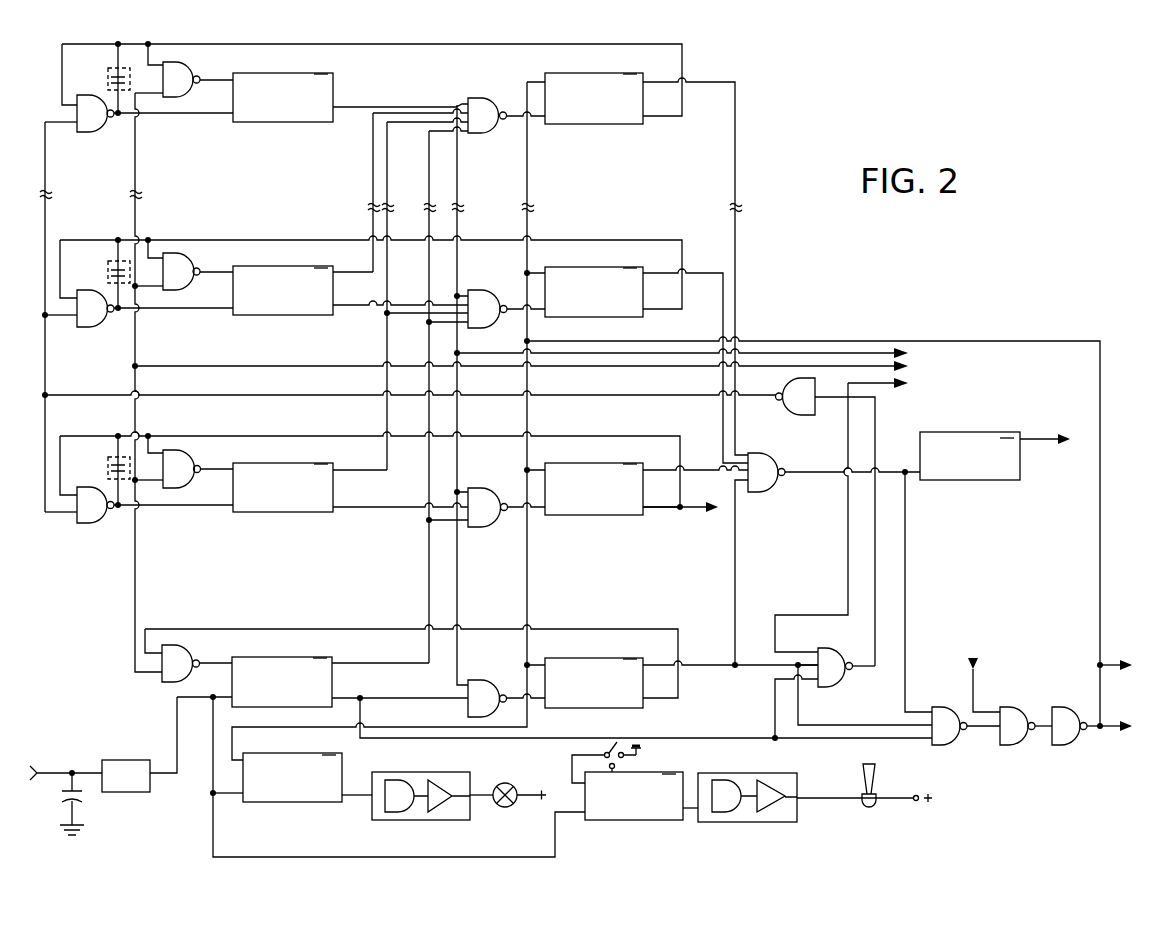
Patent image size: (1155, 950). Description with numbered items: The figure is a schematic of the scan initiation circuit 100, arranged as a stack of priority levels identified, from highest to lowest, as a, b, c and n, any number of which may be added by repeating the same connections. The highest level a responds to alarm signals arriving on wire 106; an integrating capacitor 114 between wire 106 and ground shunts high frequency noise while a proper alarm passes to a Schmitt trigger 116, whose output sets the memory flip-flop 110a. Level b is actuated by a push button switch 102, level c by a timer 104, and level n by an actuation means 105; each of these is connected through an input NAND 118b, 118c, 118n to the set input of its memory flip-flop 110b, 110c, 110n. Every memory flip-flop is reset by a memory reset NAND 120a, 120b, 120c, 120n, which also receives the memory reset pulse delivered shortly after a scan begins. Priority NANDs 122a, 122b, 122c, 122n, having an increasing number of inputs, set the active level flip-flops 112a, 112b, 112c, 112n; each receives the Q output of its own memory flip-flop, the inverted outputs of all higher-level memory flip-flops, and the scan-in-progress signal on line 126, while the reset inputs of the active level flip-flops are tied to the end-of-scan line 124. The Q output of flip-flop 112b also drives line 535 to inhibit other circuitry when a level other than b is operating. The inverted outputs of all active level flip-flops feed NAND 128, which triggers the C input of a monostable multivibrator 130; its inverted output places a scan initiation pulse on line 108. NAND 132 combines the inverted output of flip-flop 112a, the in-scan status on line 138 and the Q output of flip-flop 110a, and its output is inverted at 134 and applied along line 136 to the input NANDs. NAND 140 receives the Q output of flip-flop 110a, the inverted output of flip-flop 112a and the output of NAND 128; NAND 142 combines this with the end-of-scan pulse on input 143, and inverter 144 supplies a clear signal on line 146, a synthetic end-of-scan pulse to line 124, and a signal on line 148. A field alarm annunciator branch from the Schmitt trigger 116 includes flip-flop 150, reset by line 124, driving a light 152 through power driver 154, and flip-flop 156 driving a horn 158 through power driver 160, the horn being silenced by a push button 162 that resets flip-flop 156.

The scan initiation circuit 100 is at (290, 576).
The push button switch 102 is at (106, 460).
The timer 104 is at (108, 265).
The actuation means 105 is at (108, 72).
The wire 106 is at (62, 759).
The line 108 is at (1044, 436).
The memory flip-flop 110a is at (282, 683).
The memory flip-flop 110b is at (283, 488).
The memory flip-flop 110c is at (283, 292).
The memory flip-flop 110n is at (283, 98).
The active level flip-flop 112a is at (594, 685).
The active level flip-flop 112b is at (594, 490).
The active level flip-flop 112c is at (594, 293).
The active level flip-flop 112n is at (594, 99).
The integrating capacitor 114 is at (85, 800).
The Schmitt trigger 116 is at (106, 760).
The input NAND 118b is at (85, 523).
The input NAND 118c is at (92, 327).
The input NAND 118n is at (92, 132).
The memory reset NAND 120a is at (186, 646).
The memory reset NAND 120b is at (184, 452).
The memory reset NAND 120c is at (184, 255).
The memory reset NAND 120n is at (184, 63).
The priority NAND 122a is at (468, 680).
The priority NAND 122b is at (482, 488).
The priority NAND 122c is at (472, 290).
The priority NAND 122n is at (478, 98).
The line 124 is at (794, 342).
The line 126 is at (757, 352).
The NAND 128 is at (774, 452).
The monostable multivibrator 130 is at (976, 481).
The NAND 132 is at (842, 650).
The inverter 134 is at (794, 413).
The line 136 is at (584, 397).
The line 138 is at (908, 384).
The NAND 140 is at (943, 707).
The NAND 142 is at (1024, 708).
The input 143 is at (981, 671).
The inverter 144 is at (1070, 705).
The line 146 is at (1099, 650).
The line 148 is at (1106, 734).
The flip-flop 150 is at (277, 780).
The light 152 is at (500, 807).
The power driver 154 is at (402, 820).
The flip-flop 156 is at (634, 799).
The horn 158 is at (868, 806).
The power driver 160 is at (746, 822).
The push button 162 is at (610, 746).
The line 535 is at (686, 514).